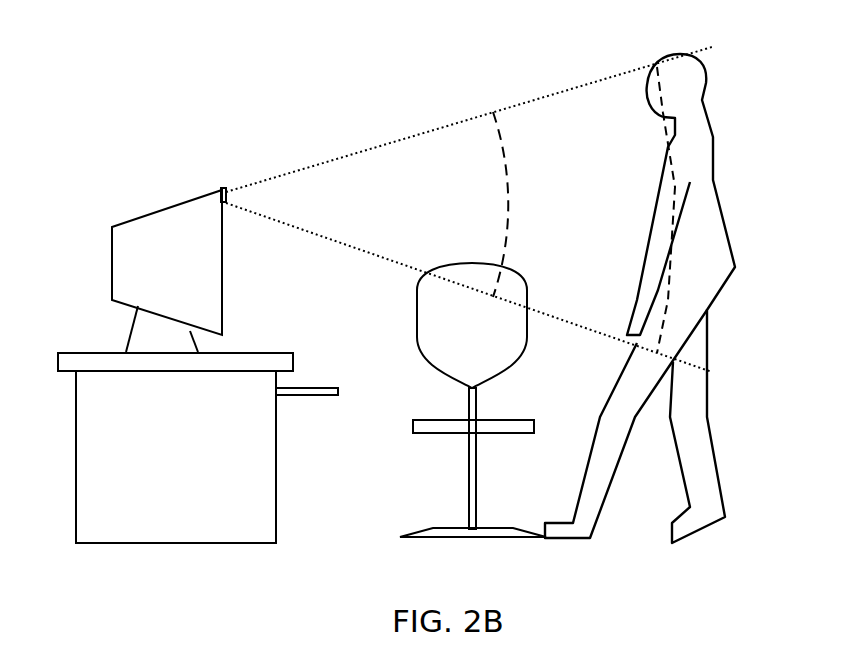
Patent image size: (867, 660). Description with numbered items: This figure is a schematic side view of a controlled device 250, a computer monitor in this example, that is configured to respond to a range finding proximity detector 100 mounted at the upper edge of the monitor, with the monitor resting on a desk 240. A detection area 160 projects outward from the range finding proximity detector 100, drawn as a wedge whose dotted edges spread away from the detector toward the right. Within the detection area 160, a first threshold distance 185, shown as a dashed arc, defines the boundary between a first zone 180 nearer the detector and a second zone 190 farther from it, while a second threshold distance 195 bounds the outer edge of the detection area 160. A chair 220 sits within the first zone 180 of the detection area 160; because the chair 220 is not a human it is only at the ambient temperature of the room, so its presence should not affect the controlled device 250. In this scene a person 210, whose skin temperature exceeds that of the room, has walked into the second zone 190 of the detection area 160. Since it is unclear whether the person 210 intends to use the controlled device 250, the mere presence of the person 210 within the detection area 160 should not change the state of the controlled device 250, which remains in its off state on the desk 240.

The range finding proximity detector 100 is at (222, 188).
The detection area 160 is at (433, 112).
The first zone 180 is at (394, 215).
The first threshold distance 185 is at (503, 147).
The second zone 190 is at (588, 245).
The second threshold distance 195 is at (667, 123).
The person 210 is at (698, 107).
The chair 220 is at (494, 338).
The desk 240 is at (197, 451).
The controlled device 250 is at (196, 274).